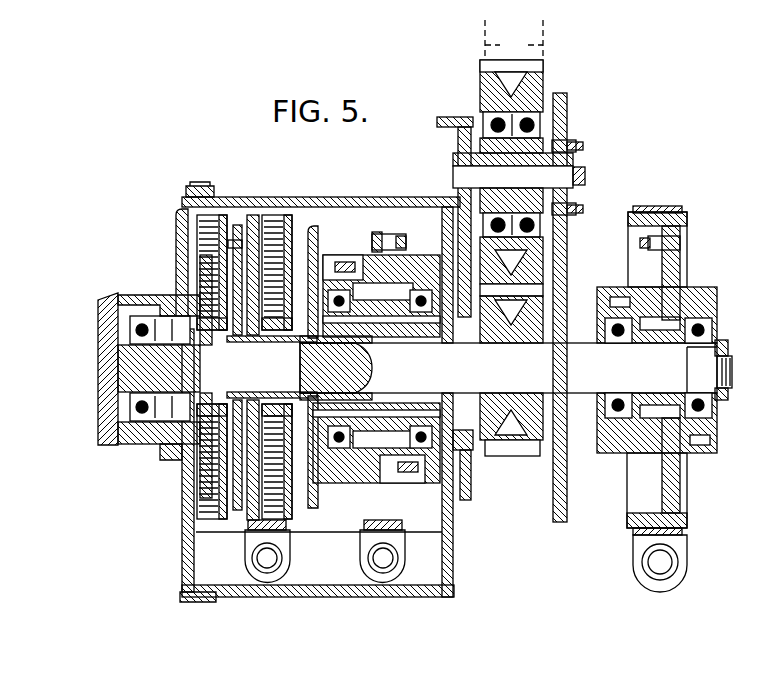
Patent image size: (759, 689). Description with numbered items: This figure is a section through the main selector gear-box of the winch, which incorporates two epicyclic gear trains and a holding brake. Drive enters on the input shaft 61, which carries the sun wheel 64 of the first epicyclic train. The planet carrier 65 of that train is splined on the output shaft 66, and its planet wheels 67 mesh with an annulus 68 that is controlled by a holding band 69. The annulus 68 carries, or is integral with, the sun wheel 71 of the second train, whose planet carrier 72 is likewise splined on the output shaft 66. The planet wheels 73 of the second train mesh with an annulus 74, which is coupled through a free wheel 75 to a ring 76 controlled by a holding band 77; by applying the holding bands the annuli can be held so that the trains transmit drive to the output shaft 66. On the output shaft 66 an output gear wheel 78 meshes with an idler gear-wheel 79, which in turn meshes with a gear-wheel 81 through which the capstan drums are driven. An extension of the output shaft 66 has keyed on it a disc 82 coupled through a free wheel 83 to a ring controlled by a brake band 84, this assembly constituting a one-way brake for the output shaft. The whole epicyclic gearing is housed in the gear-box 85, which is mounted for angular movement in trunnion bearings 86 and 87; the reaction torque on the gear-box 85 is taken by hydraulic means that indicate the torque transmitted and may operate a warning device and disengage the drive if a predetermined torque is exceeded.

The input shaft 61 is at (150, 358).
The sun wheel 64 is at (172, 454).
The planet carrier 65 is at (205, 300).
The output shaft 66 is at (407, 378).
The planet wheels 67 is at (205, 262).
The annulus 68 is at (177, 221).
The holding band 69 is at (258, 200).
The sun wheel 71 is at (372, 398).
The planet carrier 72 is at (372, 340).
The planet wheels 73 is at (290, 247).
The annulus 74 is at (306, 232).
The free wheel 75 is at (404, 262).
The ring 76 is at (402, 234).
The holding band 77 is at (378, 207).
The output gear wheel 78 is at (510, 457).
The idler gear-wheel 79 is at (481, 80).
The gear-wheel 81 is at (482, 53).
The disc 82 is at (630, 292).
The free wheel 83 is at (655, 315).
The brake band 84 is at (658, 212).
The gear-box 85 is at (453, 566).
The trunnion bearing 86 is at (145, 437).
The trunnion bearing 87 is at (476, 450).